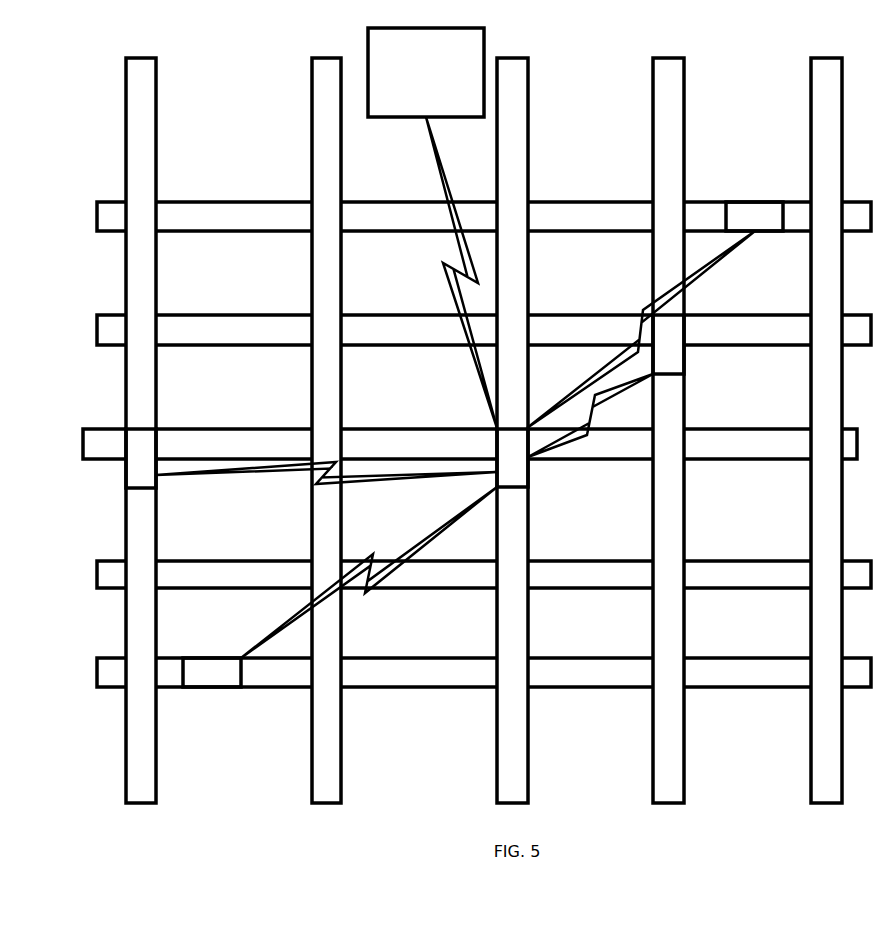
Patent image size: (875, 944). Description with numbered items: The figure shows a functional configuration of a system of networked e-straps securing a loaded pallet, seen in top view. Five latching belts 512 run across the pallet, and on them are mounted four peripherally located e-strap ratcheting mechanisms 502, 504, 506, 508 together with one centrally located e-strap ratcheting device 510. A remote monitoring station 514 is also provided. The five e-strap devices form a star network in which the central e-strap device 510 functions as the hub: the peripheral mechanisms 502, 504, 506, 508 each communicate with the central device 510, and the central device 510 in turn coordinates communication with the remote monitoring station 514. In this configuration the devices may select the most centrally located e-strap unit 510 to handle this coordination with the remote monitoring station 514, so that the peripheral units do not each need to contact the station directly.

The peripherally located e-strap ratcheting mechanism 502 is at (655, 315).
The peripherally located e-strap ratcheting mechanism 504 is at (311, 458).
The peripherally located e-strap ratcheting mechanism 506 is at (608, 386).
The peripherally located e-strap ratcheting mechanism 508 is at (340, 587).
The centrally located e-strap ratcheting device 510 is at (515, 458).
The latching belt 512 is at (306, 84).
The remote monitoring station 514 is at (432, 228).